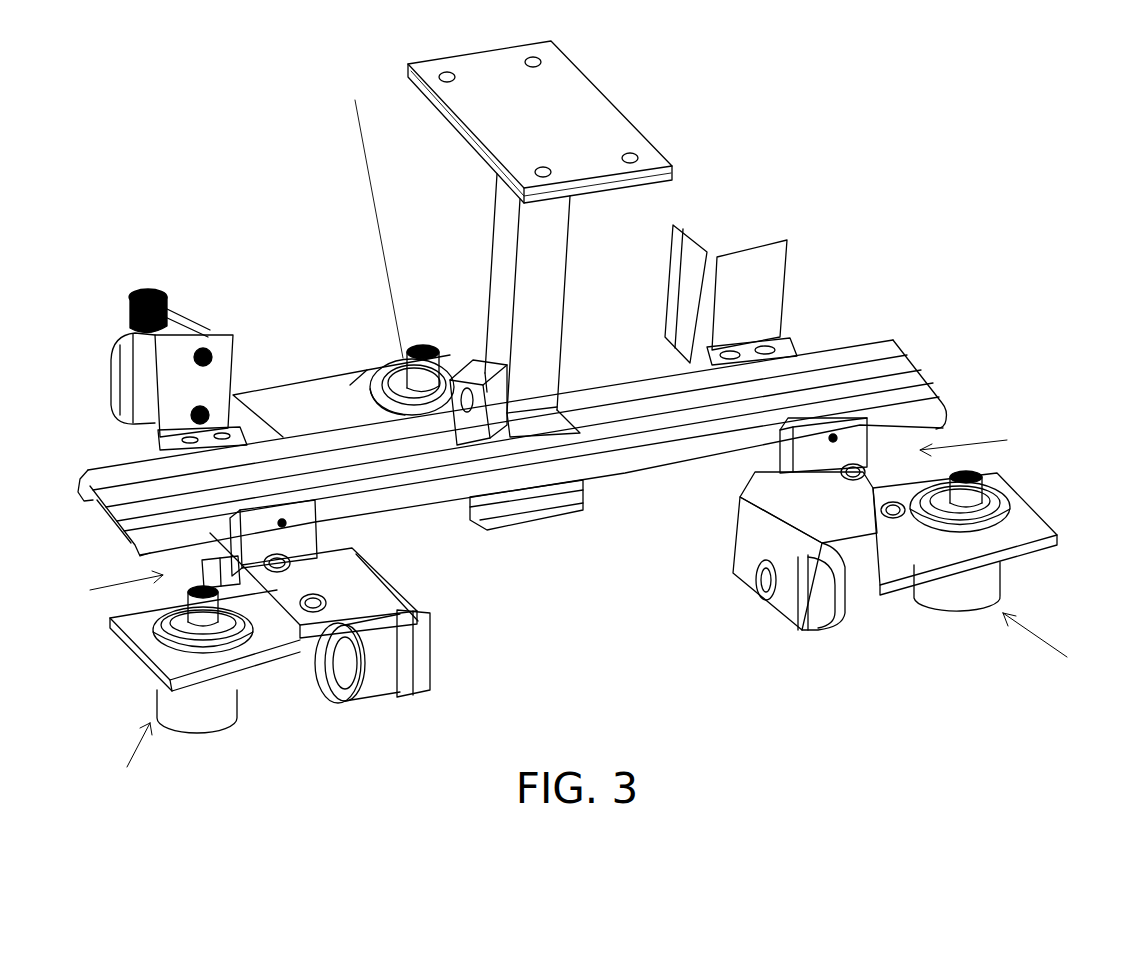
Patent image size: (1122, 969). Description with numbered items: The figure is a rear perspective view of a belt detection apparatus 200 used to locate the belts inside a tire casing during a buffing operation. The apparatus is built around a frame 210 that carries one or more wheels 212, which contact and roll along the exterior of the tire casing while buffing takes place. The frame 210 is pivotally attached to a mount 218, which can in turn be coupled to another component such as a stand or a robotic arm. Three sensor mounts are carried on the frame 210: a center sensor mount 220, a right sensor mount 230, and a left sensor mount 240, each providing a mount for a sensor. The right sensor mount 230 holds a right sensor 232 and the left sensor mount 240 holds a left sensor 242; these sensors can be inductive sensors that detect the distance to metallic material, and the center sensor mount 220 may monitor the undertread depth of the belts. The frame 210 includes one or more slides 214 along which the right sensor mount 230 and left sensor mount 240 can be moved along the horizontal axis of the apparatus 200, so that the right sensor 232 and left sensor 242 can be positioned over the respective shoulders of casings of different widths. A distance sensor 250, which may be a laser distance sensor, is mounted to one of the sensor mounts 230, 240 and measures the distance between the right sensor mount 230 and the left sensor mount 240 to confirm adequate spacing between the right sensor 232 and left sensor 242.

The belt detection apparatus 200 is at (906, 141).
The frame 210 is at (978, 332).
The wheels 212 is at (813, 610).
The slides 214 is at (945, 402).
The mount 218 is at (643, 138).
The center sensor mount 220 is at (343, 377).
The right sensor mount 230 is at (410, 600).
The right sensor 232 is at (167, 703).
The left sensor mount 240 is at (1023, 513).
The left sensor 242 is at (1000, 590).
The distance sensor 250 is at (173, 303).